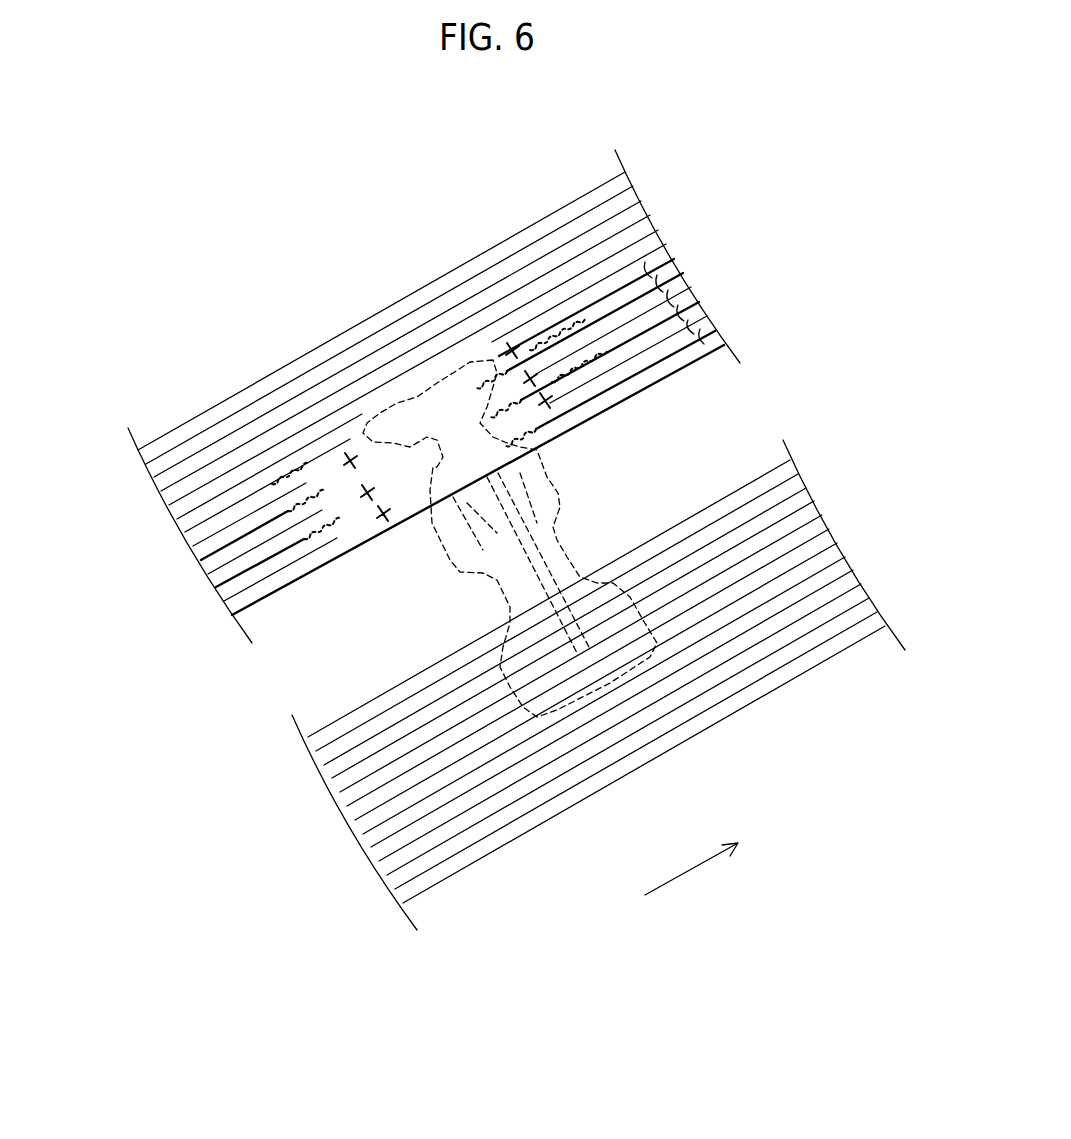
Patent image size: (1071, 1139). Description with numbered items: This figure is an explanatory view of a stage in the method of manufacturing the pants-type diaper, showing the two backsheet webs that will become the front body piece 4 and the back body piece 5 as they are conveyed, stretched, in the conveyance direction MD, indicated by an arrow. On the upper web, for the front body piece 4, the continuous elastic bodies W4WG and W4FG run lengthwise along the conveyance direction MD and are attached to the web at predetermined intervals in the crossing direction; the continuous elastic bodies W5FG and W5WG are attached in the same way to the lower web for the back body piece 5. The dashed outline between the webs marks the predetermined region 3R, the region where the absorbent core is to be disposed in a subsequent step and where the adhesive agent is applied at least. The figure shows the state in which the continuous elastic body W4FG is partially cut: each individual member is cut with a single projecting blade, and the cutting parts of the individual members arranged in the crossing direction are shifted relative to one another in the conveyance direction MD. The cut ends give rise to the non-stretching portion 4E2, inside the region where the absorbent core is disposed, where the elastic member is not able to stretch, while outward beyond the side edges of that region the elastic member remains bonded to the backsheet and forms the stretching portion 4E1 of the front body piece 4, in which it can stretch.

The front body piece 4 is at (434, 392).
The back body piece 5 is at (565, 702).
The stretching portion 4E1 is at (700, 329).
The non-stretching portion 4E2 is at (320, 550).
The predetermined region 3R is at (560, 505).
The continuous elastic body W4WG is at (176, 538).
The continuous elastic body W4FG is at (230, 636).
The continuous elastic body W5FG is at (345, 832).
The continuous elastic body W5WG is at (398, 917).
The conveyance direction MD is at (691, 873).